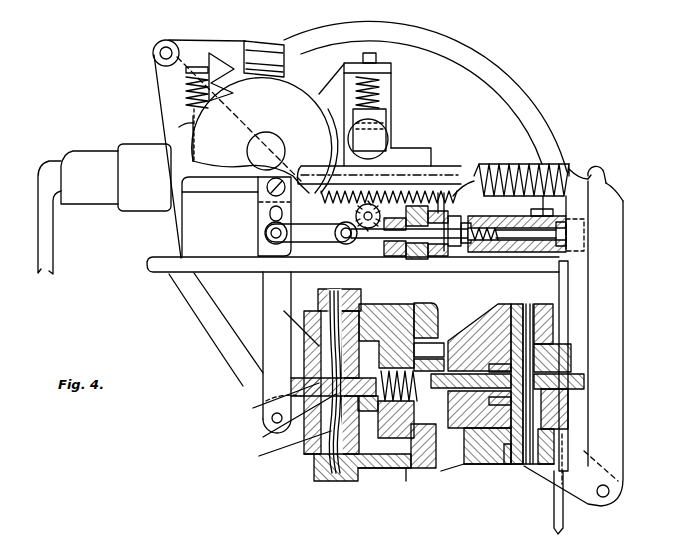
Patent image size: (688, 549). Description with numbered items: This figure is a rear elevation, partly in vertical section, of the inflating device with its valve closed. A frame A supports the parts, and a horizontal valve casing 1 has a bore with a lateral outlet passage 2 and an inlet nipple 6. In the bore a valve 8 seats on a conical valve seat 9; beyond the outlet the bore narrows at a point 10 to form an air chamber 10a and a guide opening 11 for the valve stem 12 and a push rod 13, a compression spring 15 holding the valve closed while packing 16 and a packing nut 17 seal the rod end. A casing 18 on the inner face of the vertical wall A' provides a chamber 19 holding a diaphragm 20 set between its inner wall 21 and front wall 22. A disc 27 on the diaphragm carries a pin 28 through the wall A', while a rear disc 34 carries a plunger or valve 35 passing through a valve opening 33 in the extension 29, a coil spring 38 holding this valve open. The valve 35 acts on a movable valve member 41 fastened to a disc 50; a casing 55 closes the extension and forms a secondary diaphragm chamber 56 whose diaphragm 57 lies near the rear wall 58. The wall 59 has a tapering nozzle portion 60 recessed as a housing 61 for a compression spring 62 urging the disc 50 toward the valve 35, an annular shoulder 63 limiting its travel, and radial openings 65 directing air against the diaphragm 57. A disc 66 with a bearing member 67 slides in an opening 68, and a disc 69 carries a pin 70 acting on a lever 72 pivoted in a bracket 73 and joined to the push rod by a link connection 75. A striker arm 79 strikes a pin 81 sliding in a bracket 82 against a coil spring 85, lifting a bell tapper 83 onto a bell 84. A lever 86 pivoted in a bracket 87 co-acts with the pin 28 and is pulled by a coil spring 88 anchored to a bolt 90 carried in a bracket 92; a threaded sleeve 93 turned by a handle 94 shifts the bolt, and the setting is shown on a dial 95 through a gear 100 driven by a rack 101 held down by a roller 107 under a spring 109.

The valve casing 1 is at (503, 253).
The lateral outlet passage 2 is at (471, 178).
The nipple 6 is at (545, 253).
The valve 8 is at (466, 248).
The conical valve seat 9 is at (483, 224).
The point of bore reduction 10 is at (434, 254).
The air chamber 10a is at (454, 248).
The guide opening 11 is at (438, 190).
The valve stem 12 is at (445, 190).
The push rod 13 is at (367, 238).
The compression spring 15 is at (512, 224).
The packing 16 is at (412, 252).
The packing nut 17 is at (390, 247).
The casing 18 is at (552, 312).
The interior chamber 19 is at (514, 347).
The diaphragm 20 is at (552, 352).
The inner wall 21 is at (505, 376).
The outer or front wall 22 is at (567, 420).
The disc 27 is at (563, 374).
The pin 28 is at (583, 382).
The rearwardly extending portion 29 is at (438, 314).
The circular valve opening 33 is at (485, 358).
The disc 34 is at (506, 450).
The plunger or valve 35 is at (483, 455).
The coil spring 38 is at (475, 457).
The movable valve member 41 is at (448, 352).
The disc 50 is at (426, 469).
The casing 55 is at (409, 482).
The secondary diaphragm chamber 56 is at (318, 464).
The diaphragm 57 is at (305, 456).
The rear wall 58 is at (302, 338).
The wall 59 is at (397, 469).
The inwardly tapering portion 60 is at (390, 426).
The housing 61 is at (375, 412).
The compression spring 62 is at (384, 366).
The annular shoulder 63 is at (380, 342).
The radial openings 65 is at (356, 355).
The disc 66 is at (284, 448).
The lateral bearing member 67 is at (275, 400).
The opening 68 is at (288, 420).
The disc 69 is at (295, 321).
The projecting pin 70 is at (296, 380).
The lever 72 is at (262, 292).
The bracket 73 is at (270, 421).
The pivoted link connection 75 is at (311, 241).
The striker arm 79 is at (254, 192).
The pin 81 is at (188, 178).
The bracket 82 is at (190, 115).
The bell tapper 83 is at (242, 42).
The bell 84 is at (302, 90).
The coil spring 85 is at (183, 93).
The lever 86 is at (625, 320).
The bracket 87 is at (573, 502).
The coil spring 88 is at (565, 165).
The bolt 90 is at (428, 164).
The bracket 92 is at (146, 211).
The interiorly threaded sleeve 93 is at (95, 151).
The handle 94 is at (52, 239).
The dial 95 is at (478, 52).
The gear 100 is at (355, 214).
The rack 101 is at (403, 129).
The roller 107 is at (388, 120).
The spring 109 is at (380, 92).
The frame A is at (344, 277).
The vertical wall A' is at (586, 361).